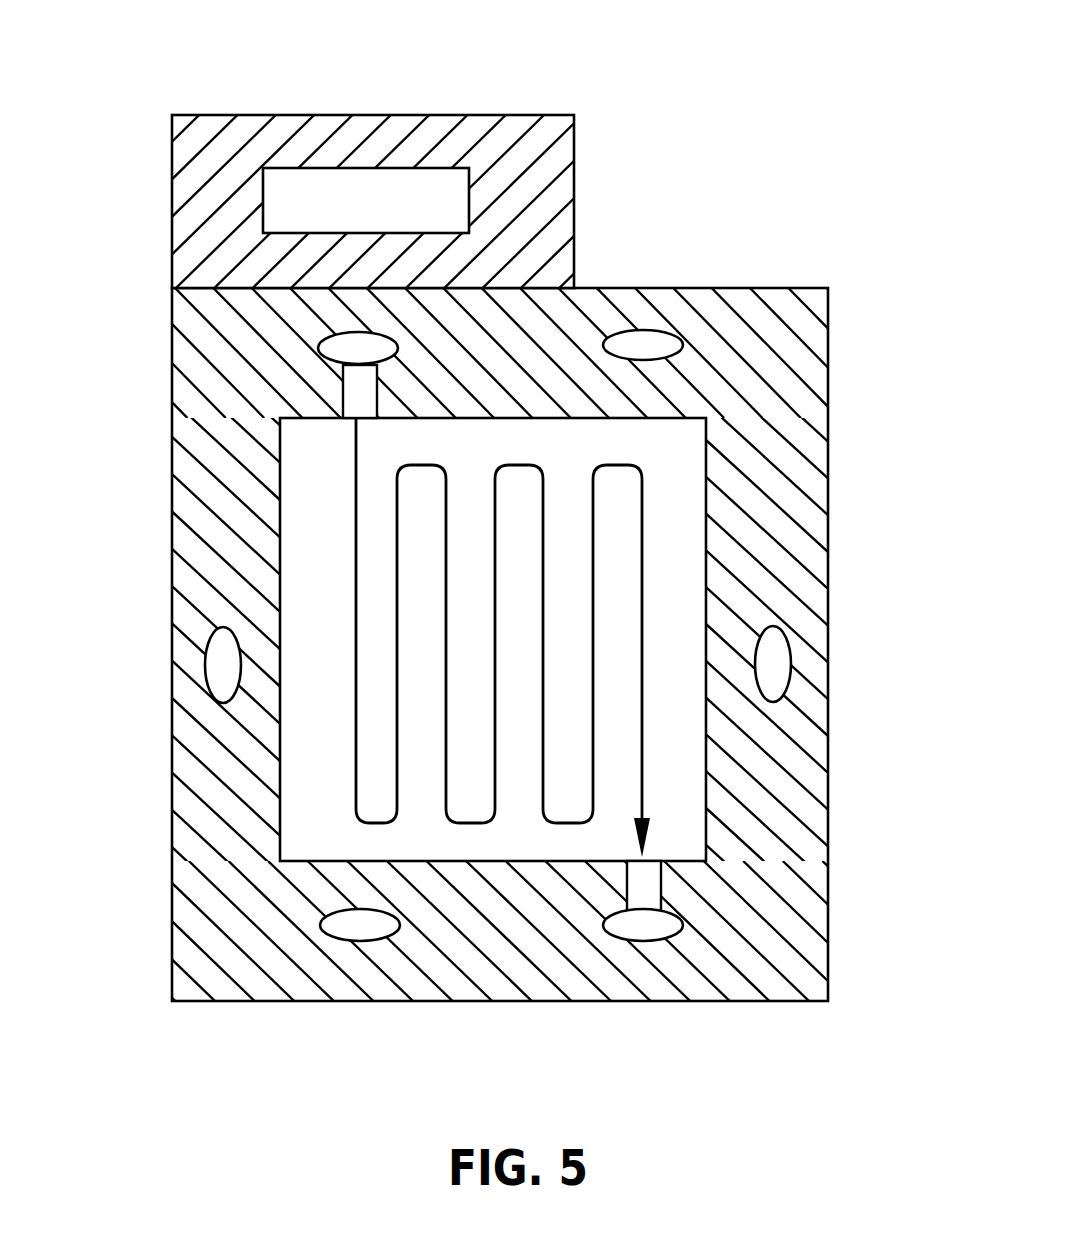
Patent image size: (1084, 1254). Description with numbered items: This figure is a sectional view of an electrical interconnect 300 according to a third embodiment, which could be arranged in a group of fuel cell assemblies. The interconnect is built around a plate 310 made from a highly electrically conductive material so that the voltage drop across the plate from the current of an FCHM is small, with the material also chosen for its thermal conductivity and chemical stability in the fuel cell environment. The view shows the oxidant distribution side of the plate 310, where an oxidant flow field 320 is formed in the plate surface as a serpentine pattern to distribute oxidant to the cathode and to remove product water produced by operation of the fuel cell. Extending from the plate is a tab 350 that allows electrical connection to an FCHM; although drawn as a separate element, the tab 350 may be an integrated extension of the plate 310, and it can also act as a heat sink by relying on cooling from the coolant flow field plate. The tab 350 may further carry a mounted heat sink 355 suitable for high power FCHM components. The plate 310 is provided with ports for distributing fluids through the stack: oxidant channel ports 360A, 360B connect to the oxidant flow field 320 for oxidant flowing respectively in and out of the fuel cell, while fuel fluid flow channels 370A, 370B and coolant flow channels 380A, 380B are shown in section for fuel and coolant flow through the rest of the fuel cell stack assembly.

The electrical interconnect 300 is at (683, 88).
The plate 310 is at (737, 303).
The oxidant flow field 320 is at (645, 577).
The tab 350 is at (395, 132).
The heat sink 355 is at (457, 178).
The oxidant channel port 360A is at (342, 347).
The oxidant channel port 360B is at (652, 928).
The fuel fluid flow channel 370A is at (660, 345).
The fuel fluid flow channel 370B is at (354, 925).
The coolant flow channel 380A is at (218, 668).
The coolant flow channel 380B is at (772, 668).